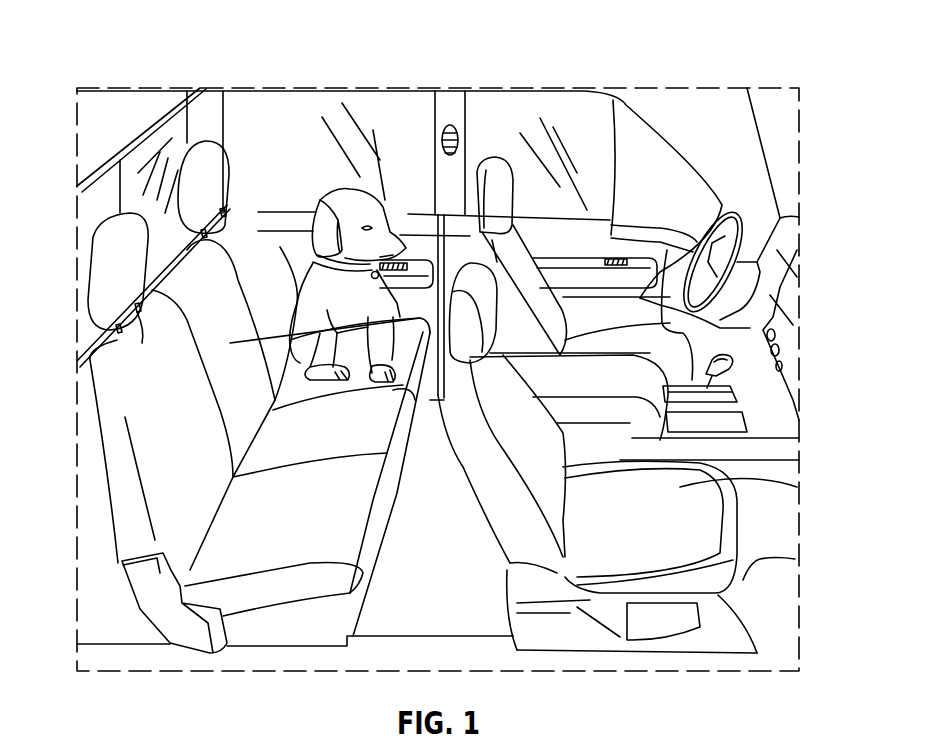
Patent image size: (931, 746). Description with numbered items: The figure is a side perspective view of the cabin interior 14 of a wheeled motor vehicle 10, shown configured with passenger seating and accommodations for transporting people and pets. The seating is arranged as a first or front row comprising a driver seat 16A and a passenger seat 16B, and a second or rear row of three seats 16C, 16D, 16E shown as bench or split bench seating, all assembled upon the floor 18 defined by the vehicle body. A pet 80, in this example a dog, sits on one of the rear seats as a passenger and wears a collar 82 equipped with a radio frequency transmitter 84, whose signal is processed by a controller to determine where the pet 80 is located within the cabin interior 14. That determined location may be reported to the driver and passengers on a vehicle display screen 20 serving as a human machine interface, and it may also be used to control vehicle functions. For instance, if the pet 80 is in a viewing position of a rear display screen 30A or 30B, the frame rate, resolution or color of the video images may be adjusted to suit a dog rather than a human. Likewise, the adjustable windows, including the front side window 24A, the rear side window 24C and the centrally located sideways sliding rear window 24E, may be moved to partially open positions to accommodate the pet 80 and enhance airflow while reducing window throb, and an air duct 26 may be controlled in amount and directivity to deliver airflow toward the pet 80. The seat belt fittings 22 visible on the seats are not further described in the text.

The vehicle 10 is at (778, 70).
The cabin interior 14 is at (293, 123).
The driver seat 16A is at (643, 350).
The passenger seat 16B is at (677, 523).
The rear seat 16C is at (241, 213).
The rear seat 16D is at (177, 247).
The rear seat 16E is at (135, 307).
The floor 18 is at (443, 599).
The vehicle display screen 20 is at (774, 272).
The seat belt buckle 22 is at (399, 290).
The front left side window 24A is at (528, 127).
The rear left side window 24C is at (273, 157).
The rear window 24E is at (152, 160).
The air duct 26 is at (450, 124).
The rear display screen 30A is at (468, 205).
The rear display screen 30B is at (437, 205).
The pet 80 is at (322, 178).
The collar 82 is at (292, 306).
The RF transmitter 84 is at (290, 340).